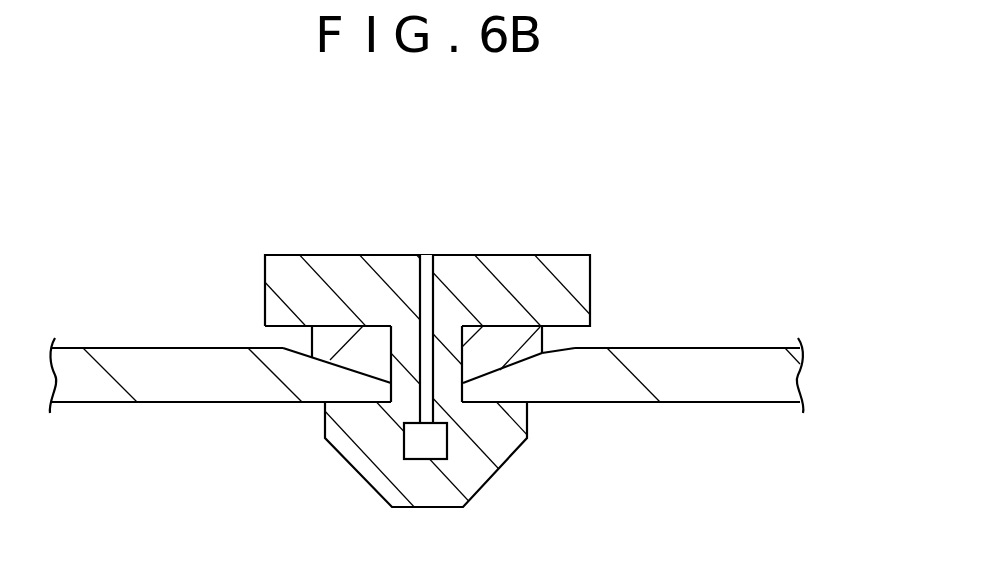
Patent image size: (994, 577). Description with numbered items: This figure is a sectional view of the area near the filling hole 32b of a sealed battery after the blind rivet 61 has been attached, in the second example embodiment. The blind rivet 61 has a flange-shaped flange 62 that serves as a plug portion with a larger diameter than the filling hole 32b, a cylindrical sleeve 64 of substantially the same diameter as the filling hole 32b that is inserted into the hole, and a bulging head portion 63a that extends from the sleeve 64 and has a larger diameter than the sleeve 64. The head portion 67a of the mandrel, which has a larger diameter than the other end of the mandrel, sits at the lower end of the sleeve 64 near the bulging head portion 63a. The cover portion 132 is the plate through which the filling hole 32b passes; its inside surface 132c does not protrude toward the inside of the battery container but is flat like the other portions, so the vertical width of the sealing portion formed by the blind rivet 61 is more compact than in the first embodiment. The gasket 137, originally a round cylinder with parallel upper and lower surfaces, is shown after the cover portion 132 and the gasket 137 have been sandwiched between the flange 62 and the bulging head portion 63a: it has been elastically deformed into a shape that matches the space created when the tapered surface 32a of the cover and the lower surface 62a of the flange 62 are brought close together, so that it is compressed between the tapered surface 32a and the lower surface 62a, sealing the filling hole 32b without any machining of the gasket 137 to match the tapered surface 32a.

The blind rivet 61 is at (260, 213).
The flange 62 is at (517, 280).
The lower surface of the flange 62a is at (578, 332).
The bulging head portion 63a is at (485, 422).
The sleeve 64 is at (410, 347).
The head portion 67a is at (408, 448).
The tapered surface 32a is at (292, 350).
The filling hole 32b is at (393, 405).
The cover portion 132 is at (158, 375).
The inside surface of the cover portion 132c is at (318, 406).
The gasket 137 is at (522, 353).